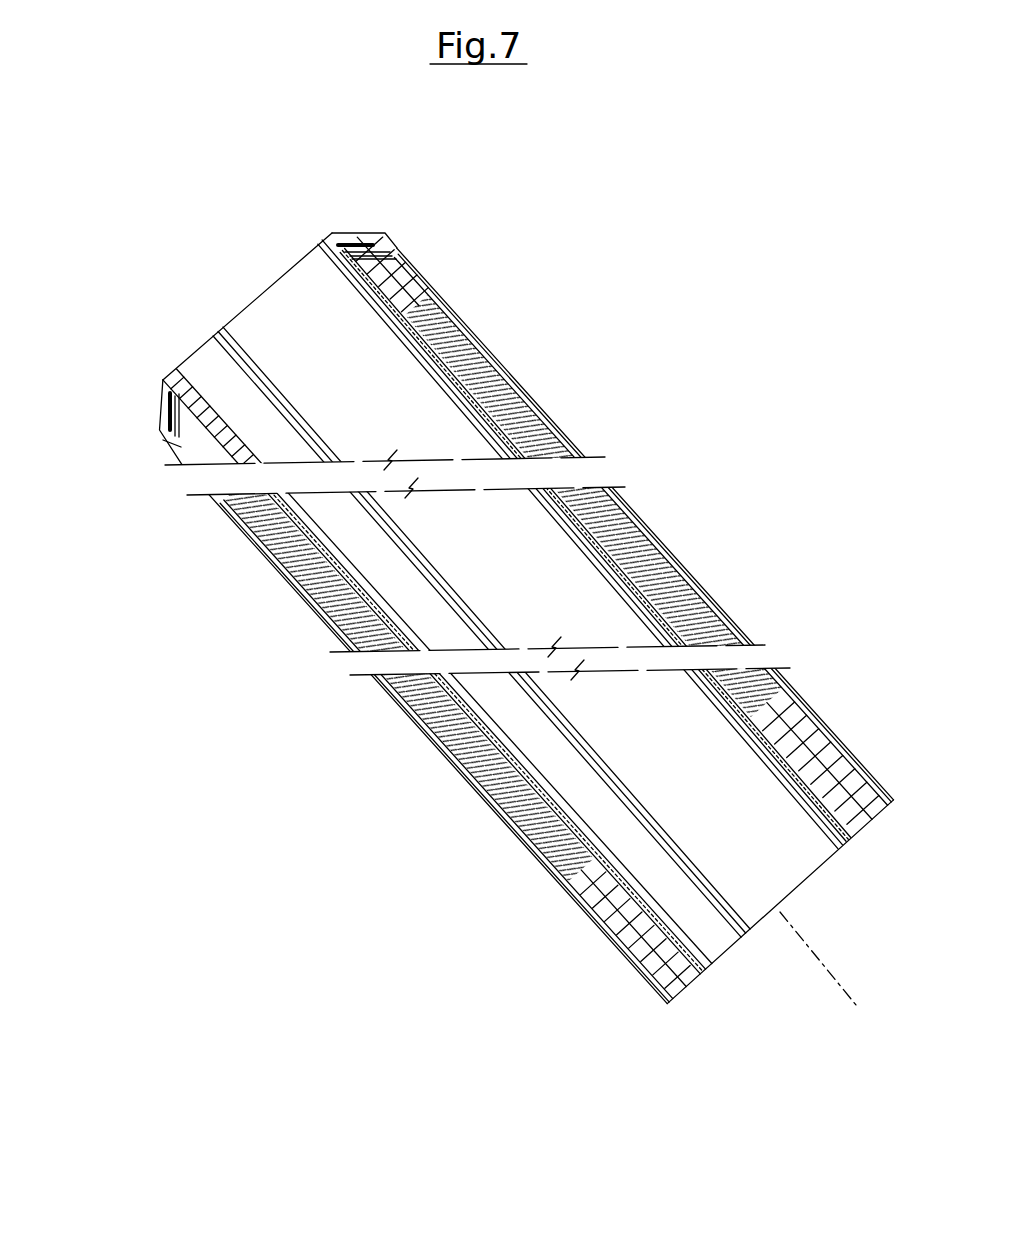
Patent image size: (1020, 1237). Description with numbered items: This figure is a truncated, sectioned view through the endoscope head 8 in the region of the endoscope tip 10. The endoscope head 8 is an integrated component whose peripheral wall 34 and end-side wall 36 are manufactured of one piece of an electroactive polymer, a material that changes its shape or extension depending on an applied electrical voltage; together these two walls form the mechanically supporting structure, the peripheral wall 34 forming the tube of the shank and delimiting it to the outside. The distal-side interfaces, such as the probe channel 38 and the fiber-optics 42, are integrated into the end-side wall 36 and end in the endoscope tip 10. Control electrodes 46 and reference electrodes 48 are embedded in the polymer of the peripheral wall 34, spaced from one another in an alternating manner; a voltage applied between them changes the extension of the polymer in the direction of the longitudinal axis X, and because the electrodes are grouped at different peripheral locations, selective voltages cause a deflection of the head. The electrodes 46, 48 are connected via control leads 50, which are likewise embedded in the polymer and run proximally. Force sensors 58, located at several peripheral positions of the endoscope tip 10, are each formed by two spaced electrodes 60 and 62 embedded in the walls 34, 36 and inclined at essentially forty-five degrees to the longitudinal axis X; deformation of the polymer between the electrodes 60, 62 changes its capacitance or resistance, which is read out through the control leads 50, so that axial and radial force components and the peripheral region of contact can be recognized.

The endoscope head 8 is at (707, 581).
The endoscope tip 10 is at (320, 233).
The peripheral wall 34 is at (866, 812).
The end-side wall 36 is at (173, 385).
The probe channel 38 is at (277, 303).
The fiber-optics 42 is at (202, 360).
The control electrodes 46 is at (415, 277).
The reference electrodes 48 is at (424, 299).
The control leads 50 is at (613, 902).
The force sensors 58 is at (362, 240).
The electrode 60 is at (380, 249).
The electrode 62 is at (400, 254).
The longitudinal axis X is at (797, 938).